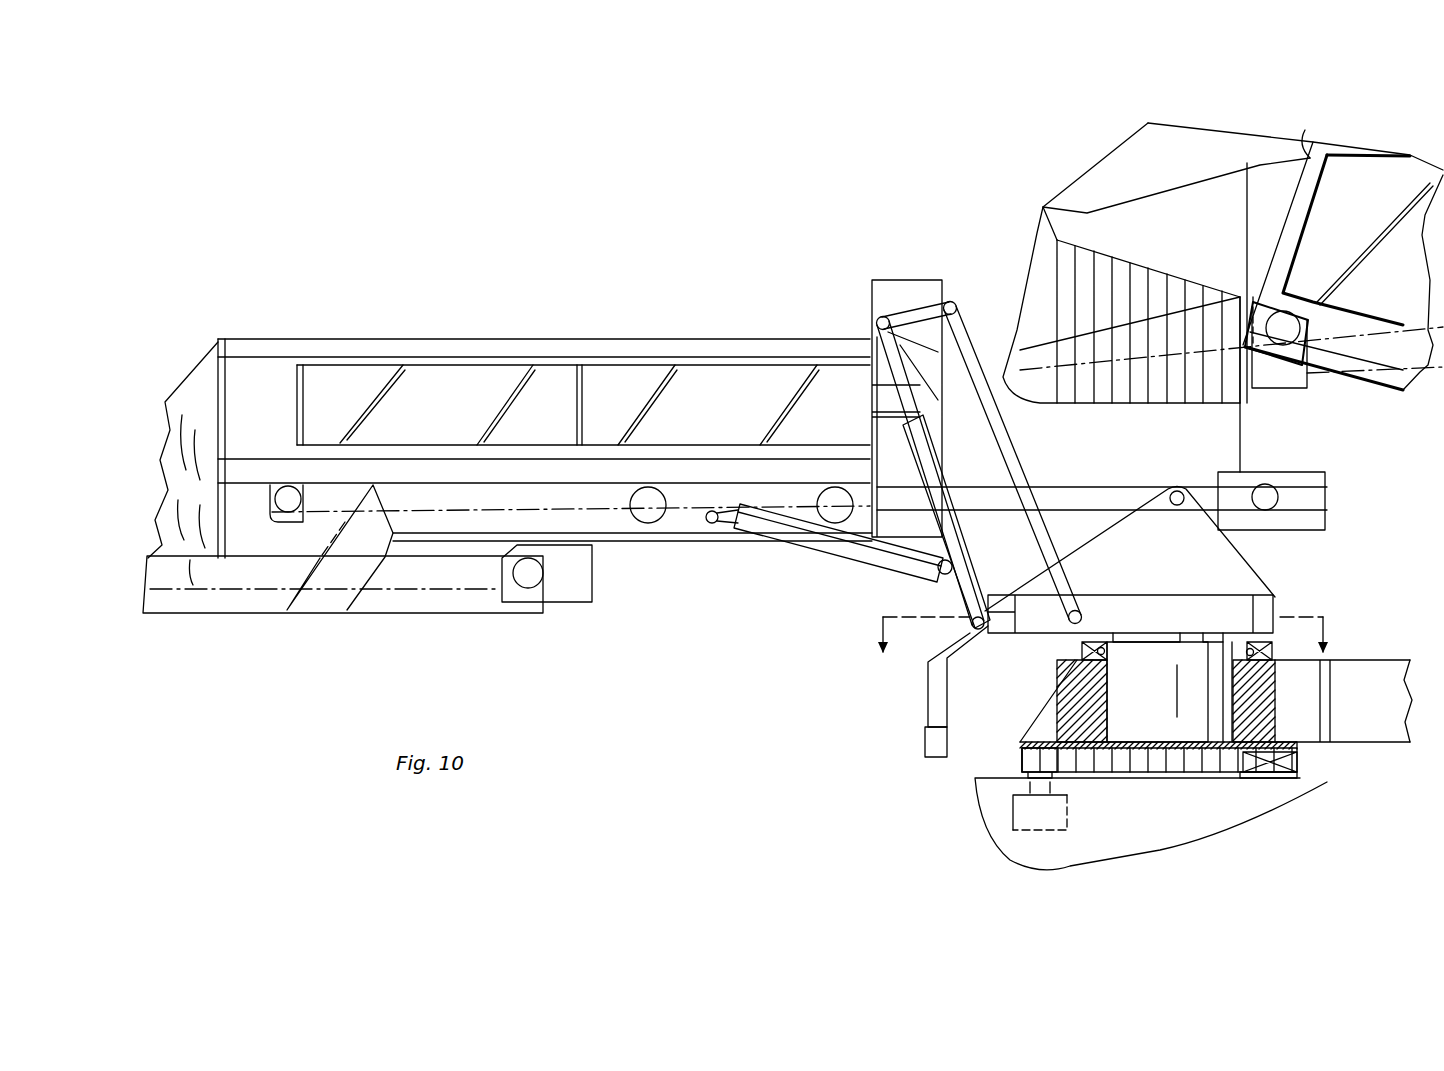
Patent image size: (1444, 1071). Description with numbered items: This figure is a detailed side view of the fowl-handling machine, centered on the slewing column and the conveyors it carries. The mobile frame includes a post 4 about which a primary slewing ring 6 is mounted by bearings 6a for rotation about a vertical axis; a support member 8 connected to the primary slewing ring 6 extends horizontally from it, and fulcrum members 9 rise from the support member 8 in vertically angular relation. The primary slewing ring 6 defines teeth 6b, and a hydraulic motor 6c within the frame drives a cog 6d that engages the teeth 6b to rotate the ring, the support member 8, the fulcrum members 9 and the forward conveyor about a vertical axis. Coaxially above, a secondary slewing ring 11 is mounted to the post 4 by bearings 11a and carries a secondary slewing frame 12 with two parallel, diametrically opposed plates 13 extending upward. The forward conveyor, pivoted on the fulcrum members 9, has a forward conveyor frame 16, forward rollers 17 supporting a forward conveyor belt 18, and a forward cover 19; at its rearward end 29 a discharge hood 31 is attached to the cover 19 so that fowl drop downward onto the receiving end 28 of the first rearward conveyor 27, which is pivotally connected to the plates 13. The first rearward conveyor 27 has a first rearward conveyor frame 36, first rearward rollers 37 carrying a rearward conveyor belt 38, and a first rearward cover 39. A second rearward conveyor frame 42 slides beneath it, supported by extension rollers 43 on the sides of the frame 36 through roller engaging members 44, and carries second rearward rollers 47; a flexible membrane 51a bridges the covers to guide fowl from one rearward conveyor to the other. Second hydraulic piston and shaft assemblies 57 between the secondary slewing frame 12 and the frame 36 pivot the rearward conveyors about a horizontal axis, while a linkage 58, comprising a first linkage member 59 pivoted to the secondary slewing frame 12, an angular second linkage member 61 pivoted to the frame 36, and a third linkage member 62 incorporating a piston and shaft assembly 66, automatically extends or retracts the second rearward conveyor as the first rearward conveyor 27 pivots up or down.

The post 4 is at (1135, 688).
The primary slewing ring 6 is at (1178, 757).
The bearings 6a is at (1285, 778).
The teeth 6b is at (1298, 767).
The hydraulic motor 6c is at (1012, 823).
The cog 6d is at (1022, 760).
The support member 8 is at (1362, 660).
The fulcrum members 9 is at (1111, 657).
The secondary slewing ring 11 is at (1270, 651).
The bearings 11a is at (1073, 662).
The secondary slewing frame 12 is at (1285, 603).
The plates 13 is at (1258, 573).
The forward conveyor frame 16 is at (1355, 142).
The forward rollers 17 is at (1280, 388).
The forward conveyor belt 18 is at (1387, 388).
The forward cover 19 is at (1368, 185).
The first rearward conveyor 27 is at (509, 336).
The receiving end 28 is at (1240, 460).
The rearward end 29 is at (1304, 133).
The discharge hood 31 is at (1163, 123).
The first rearward conveyor frame 36 is at (300, 339).
The first rearward rollers 37 is at (302, 504).
The rearward conveyor belt 38 is at (1097, 487).
The first rearward cover 39 is at (352, 378).
The second rearward conveyor frame 42 is at (372, 613).
The extension rollers 43 is at (833, 490).
The roller engaging members 44 is at (453, 542).
The second rearward rollers 47 is at (528, 588).
The flexible membrane 51a is at (186, 385).
The second hydraulic piston and shaft assemblies 57 is at (943, 597).
The linkage 58 is at (957, 302).
The first linkage member 59 is at (966, 338).
The second linkage member 61 is at (905, 317).
The third linkage member 62 is at (758, 548).
The piston and shaft assembly 66 is at (866, 568).